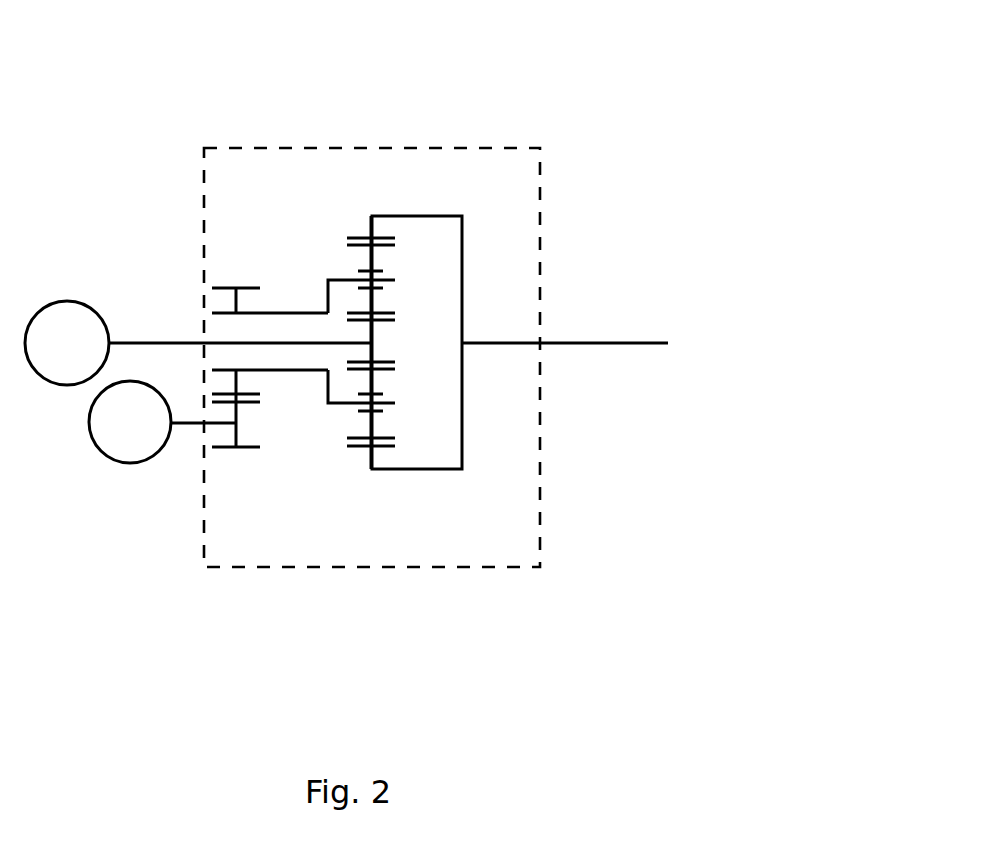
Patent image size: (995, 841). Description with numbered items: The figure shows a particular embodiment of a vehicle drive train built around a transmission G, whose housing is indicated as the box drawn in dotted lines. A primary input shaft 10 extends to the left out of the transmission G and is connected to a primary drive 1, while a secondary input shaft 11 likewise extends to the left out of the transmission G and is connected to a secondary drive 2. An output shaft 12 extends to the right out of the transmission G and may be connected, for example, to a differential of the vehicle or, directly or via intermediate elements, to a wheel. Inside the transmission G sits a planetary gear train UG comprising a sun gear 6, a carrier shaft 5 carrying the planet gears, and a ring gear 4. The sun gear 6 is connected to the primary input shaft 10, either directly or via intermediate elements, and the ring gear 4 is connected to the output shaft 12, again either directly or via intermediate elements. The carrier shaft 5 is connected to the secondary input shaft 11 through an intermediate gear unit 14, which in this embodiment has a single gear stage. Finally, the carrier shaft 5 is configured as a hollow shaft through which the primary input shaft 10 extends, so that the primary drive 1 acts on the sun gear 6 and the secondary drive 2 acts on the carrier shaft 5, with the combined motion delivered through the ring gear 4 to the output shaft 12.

The primary drive 1 is at (83, 302).
The secondary drive 2 is at (107, 462).
The ring gear 4 is at (462, 255).
The carrier shaft 5 is at (328, 404).
The sun gear 6 is at (372, 347).
The primary input shaft 10 is at (187, 343).
The secondary input shaft 11 is at (175, 425).
The output shaft 12 is at (568, 344).
The intermediate gear unit 14 is at (227, 468).
The planetary gear train UG is at (440, 192).
The transmission G is at (455, 567).